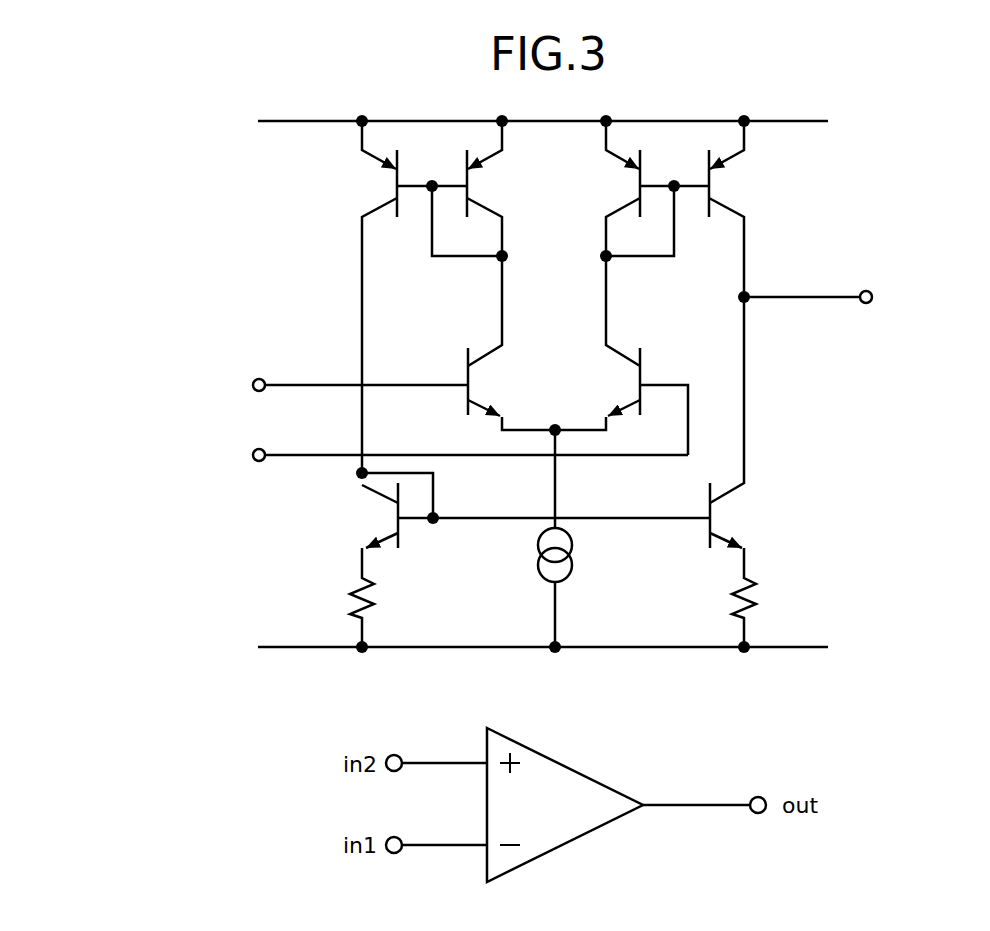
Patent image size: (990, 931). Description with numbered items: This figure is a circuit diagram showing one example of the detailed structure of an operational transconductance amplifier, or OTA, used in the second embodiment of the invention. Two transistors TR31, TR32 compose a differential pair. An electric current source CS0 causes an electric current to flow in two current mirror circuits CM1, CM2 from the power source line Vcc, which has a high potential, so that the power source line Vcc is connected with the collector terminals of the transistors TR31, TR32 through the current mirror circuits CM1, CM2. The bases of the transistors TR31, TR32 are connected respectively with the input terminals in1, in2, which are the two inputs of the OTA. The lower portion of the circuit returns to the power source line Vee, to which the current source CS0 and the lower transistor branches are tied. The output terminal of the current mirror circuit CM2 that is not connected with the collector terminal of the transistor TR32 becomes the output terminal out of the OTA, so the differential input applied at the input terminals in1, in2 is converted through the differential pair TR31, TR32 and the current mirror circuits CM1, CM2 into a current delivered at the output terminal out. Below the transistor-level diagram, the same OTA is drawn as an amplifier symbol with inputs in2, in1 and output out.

The transistor TR31 is at (479, 389).
The transistor TR32 is at (632, 401).
The electric current source CS0 is at (526, 541).
The current mirror circuit CM1 is at (188, 226).
The current mirror circuit CM2 is at (975, 194).
The power source line Vcc is at (513, 120).
The power source line Vee is at (512, 646).
The input terminal in1 is at (340, 385).
The input terminal in2 is at (450, 455).
The output terminal out is at (815, 283).